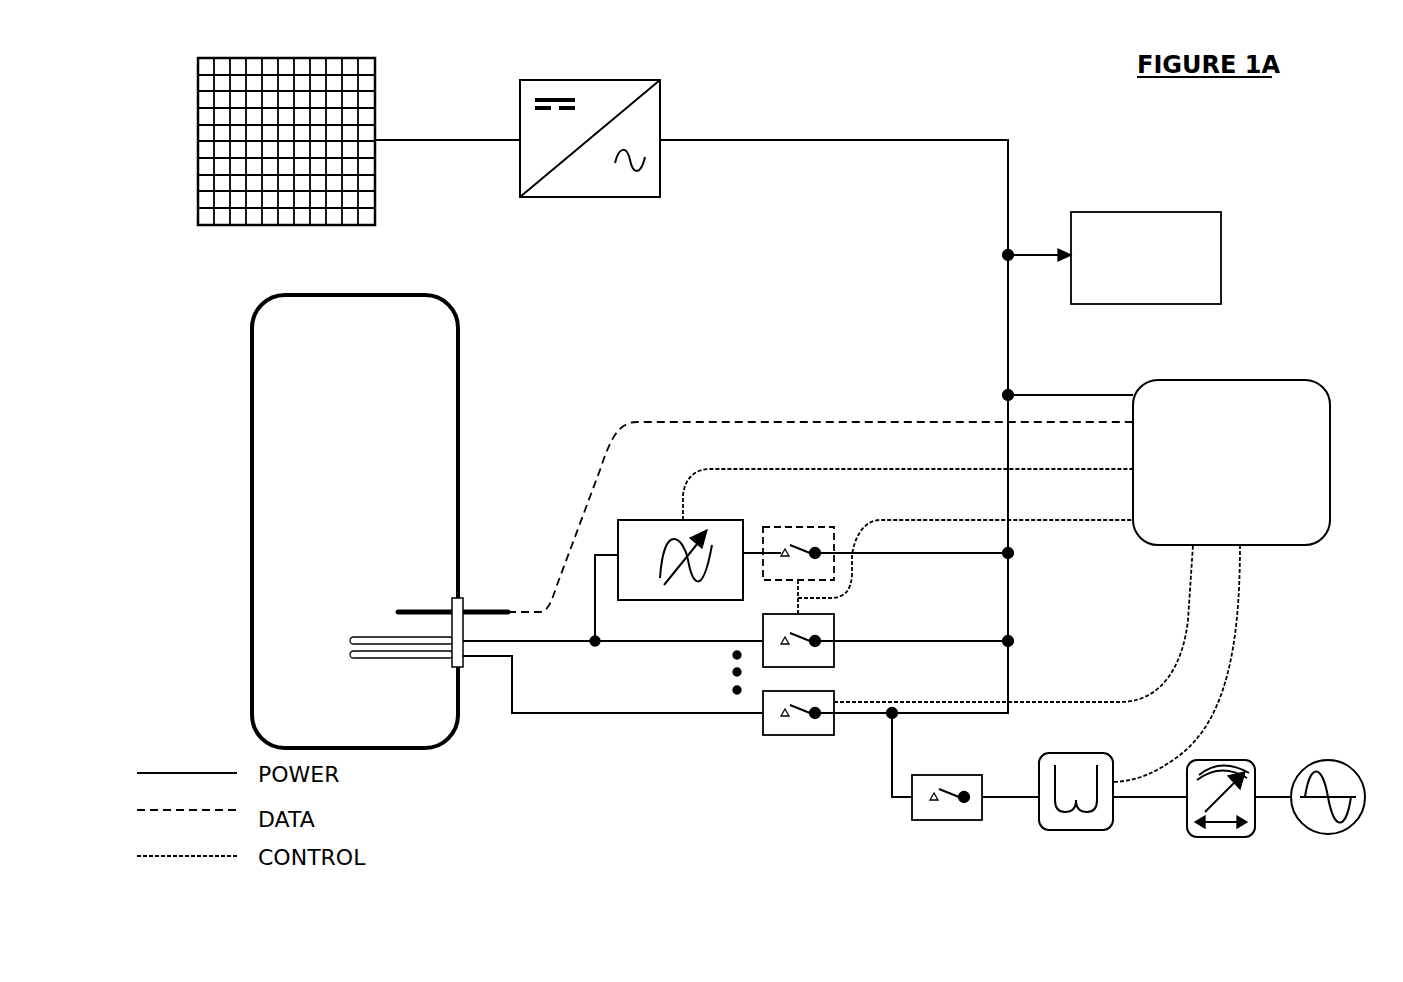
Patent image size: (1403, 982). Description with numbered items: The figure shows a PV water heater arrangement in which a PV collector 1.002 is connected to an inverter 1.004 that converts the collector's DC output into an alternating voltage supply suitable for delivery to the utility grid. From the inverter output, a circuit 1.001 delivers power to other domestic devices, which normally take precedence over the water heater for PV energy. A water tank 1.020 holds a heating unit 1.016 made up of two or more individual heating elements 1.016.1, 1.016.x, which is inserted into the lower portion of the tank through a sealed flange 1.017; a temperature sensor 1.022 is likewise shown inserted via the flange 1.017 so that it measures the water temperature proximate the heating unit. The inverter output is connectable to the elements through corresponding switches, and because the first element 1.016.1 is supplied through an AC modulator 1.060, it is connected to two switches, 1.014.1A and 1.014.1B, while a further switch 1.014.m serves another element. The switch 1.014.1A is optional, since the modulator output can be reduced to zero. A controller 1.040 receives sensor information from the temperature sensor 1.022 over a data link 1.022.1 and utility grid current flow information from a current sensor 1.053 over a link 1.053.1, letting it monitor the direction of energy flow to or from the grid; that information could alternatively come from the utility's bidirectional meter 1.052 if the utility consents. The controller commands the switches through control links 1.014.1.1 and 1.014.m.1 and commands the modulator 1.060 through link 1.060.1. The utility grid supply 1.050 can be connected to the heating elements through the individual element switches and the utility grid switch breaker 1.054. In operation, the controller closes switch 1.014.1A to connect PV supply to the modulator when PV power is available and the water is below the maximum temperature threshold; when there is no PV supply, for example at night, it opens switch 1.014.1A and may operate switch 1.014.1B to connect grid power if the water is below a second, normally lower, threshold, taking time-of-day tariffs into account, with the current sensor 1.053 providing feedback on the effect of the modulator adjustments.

The circuit for other domestic devices 1.001 is at (1114, 258).
The PV collector 1.002 is at (327, 141).
The inverter 1.004 is at (590, 125).
The water tank 1.020 is at (355, 521).
The temperature sensor 1.022 is at (437, 597).
The link 1.022.1 is at (820, 497).
The heating unit 1.016 is at (309, 655).
The heating element 1.016.1 is at (399, 632).
The heating element 1.016.x is at (401, 672).
The sealed flange 1.017 is at (463, 667).
The AC modulator 1.060 is at (680, 573).
The link 1.060.1 is at (908, 531).
The switch 1.014.1A is at (878, 536).
The switch 1.014.1B is at (888, 643).
The control link 1.014.1.1 is at (965, 553).
The switch 1.014.m is at (880, 732).
The control link 1.014.m.1 is at (1013, 623).
The controller 1.040 is at (1231, 462).
The utility grid supply 1.050 is at (1328, 815).
The bidirectional utility grid meter 1.052 is at (1221, 815).
The current sensor 1.053 is at (1076, 809).
The link 1.053.1 is at (1212, 663).
The utility grid switch 1.054 is at (947, 818).